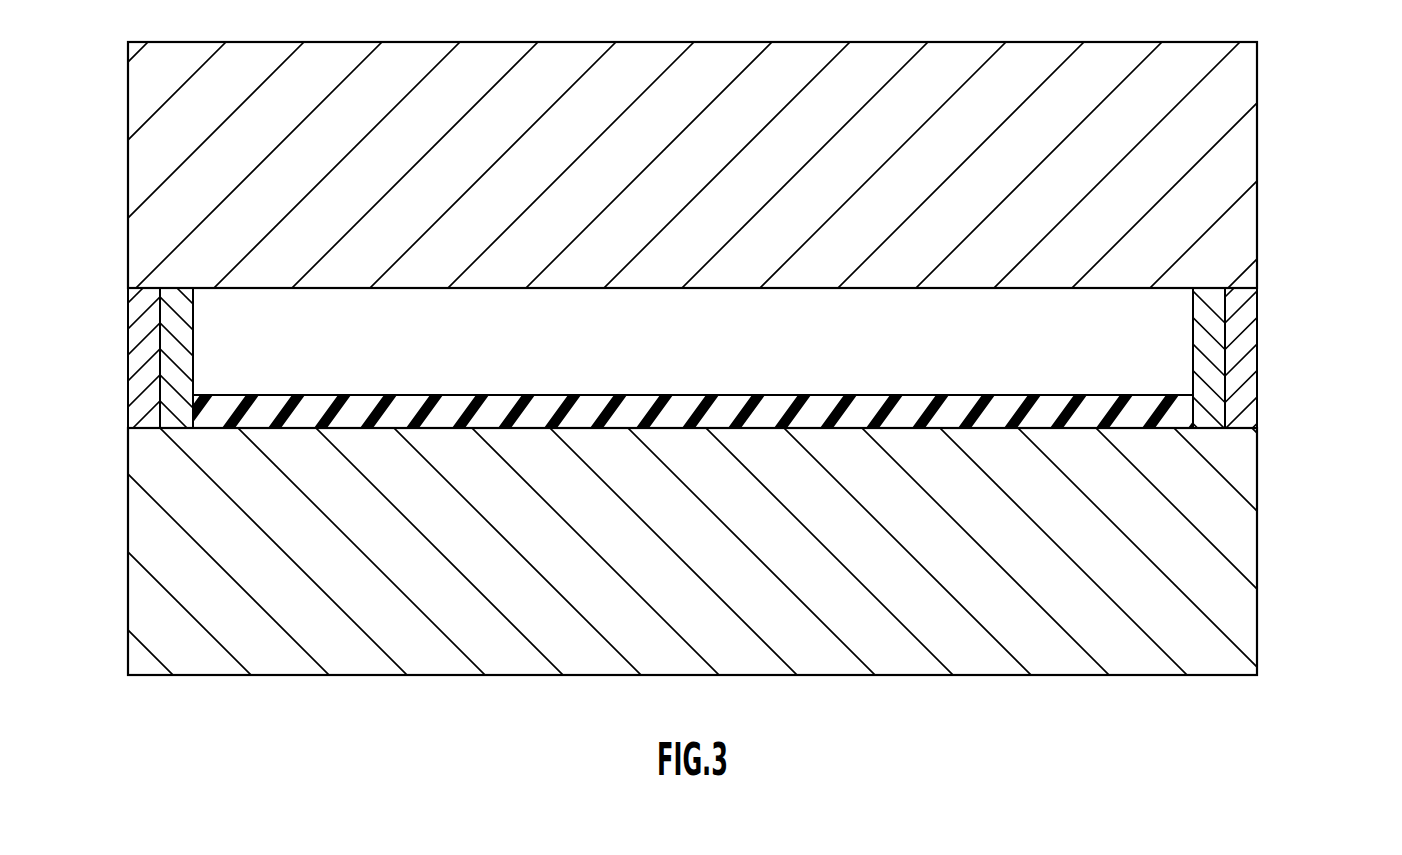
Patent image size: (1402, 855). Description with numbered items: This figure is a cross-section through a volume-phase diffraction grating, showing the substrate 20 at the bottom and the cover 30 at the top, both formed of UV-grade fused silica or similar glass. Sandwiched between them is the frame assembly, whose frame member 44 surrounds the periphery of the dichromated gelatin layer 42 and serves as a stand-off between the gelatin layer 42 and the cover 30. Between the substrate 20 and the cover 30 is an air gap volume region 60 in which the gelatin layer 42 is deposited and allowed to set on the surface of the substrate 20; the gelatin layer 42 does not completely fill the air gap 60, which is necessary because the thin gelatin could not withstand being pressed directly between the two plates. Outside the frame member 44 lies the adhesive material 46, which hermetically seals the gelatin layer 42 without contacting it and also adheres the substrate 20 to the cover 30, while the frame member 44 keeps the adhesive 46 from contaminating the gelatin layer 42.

The substrate layer 20 is at (1257, 552).
The cover layer 30 is at (1257, 140).
The dichromated gelatin layer 42 is at (1183, 407).
The frame member 44 is at (1193, 327).
The adhesive material 46 is at (1257, 358).
The air gap volume region 60 is at (710, 355).